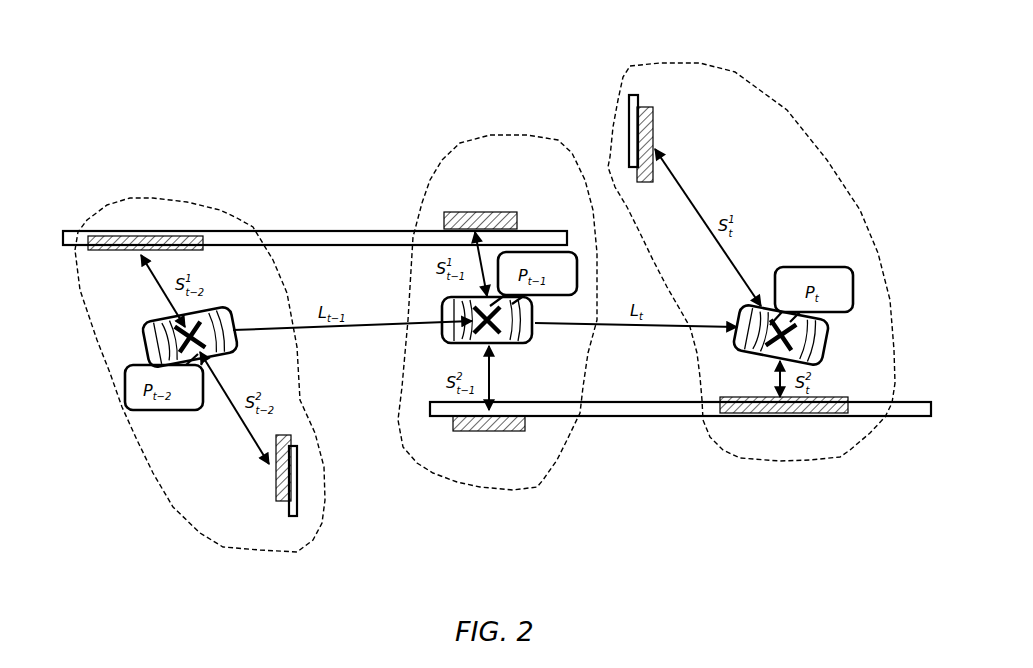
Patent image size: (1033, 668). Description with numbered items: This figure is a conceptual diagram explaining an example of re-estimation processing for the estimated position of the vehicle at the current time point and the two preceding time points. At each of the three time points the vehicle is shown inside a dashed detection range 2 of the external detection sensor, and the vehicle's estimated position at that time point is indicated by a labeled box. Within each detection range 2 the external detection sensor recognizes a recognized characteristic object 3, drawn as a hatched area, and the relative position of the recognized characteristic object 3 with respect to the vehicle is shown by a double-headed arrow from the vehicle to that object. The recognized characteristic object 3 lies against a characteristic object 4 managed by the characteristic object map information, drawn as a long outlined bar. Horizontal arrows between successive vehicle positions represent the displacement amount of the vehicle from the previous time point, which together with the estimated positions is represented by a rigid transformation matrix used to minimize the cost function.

The detection range 2 is at (153, 198).
The recognized characteristic object 3 is at (122, 252).
The characteristic object 4 is at (80, 232).